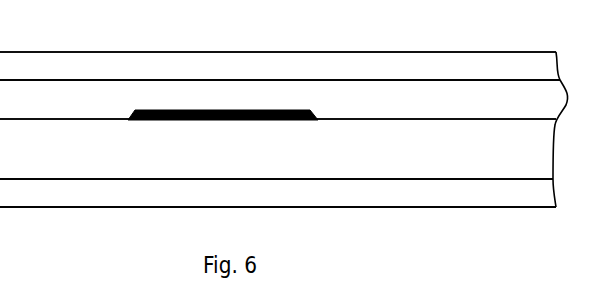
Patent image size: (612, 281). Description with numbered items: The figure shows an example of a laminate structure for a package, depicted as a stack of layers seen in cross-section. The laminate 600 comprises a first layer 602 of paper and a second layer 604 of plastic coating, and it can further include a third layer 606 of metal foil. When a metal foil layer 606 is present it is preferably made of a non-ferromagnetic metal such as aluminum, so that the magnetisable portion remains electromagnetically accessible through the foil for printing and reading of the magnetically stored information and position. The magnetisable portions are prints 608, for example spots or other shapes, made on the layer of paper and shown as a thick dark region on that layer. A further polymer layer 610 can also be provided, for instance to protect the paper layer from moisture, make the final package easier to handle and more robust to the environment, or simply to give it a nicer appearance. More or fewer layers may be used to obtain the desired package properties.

The laminate 600 is at (90, 190).
The first layer 602 is at (324, 168).
The second layer 604 is at (336, 73).
The third layer 606 is at (413, 100).
The prints 608 is at (221, 108).
The further polymer layer 610 is at (403, 195).